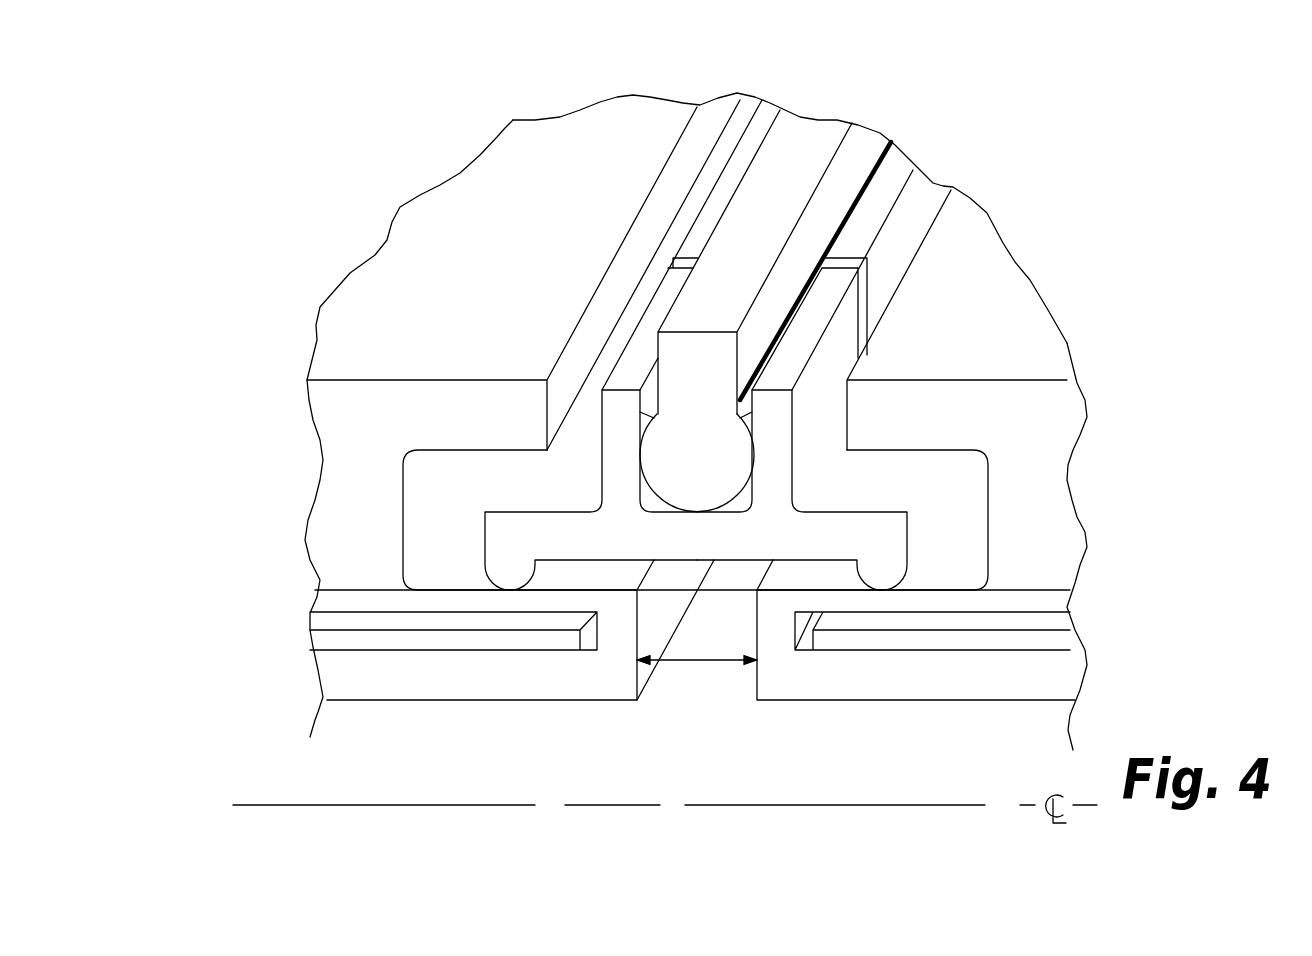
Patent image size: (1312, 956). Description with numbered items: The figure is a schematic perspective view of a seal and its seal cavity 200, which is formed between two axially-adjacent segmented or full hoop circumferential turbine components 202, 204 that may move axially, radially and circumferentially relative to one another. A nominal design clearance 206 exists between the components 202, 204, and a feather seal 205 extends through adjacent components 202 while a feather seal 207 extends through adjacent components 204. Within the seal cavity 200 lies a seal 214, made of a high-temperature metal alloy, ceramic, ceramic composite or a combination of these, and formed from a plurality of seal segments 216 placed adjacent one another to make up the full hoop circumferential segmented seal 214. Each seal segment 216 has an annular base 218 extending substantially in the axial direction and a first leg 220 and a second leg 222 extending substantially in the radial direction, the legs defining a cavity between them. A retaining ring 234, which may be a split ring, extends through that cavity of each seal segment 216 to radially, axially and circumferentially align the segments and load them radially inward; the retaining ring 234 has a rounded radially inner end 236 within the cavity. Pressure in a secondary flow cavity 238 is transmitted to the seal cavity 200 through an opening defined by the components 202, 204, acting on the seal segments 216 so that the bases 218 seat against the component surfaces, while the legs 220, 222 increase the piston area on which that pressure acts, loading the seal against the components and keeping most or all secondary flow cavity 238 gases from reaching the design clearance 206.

The seal cavity 200 is at (924, 218).
The turbine component 202 is at (463, 704).
The turbine component 204 is at (867, 703).
The feather seal 205 is at (437, 642).
The nominal design clearance 206 is at (700, 662).
The feather seal 207 is at (847, 638).
The seal 214 is at (970, 74).
The seal segments 216 is at (713, 203).
The annular base 218 is at (742, 560).
The first leg 220 is at (600, 440).
The second leg 222 is at (792, 456).
The retaining ring 234 is at (803, 153).
The rounded radially inner end 236 is at (718, 463).
The secondary flow cavity 238 is at (386, 90).